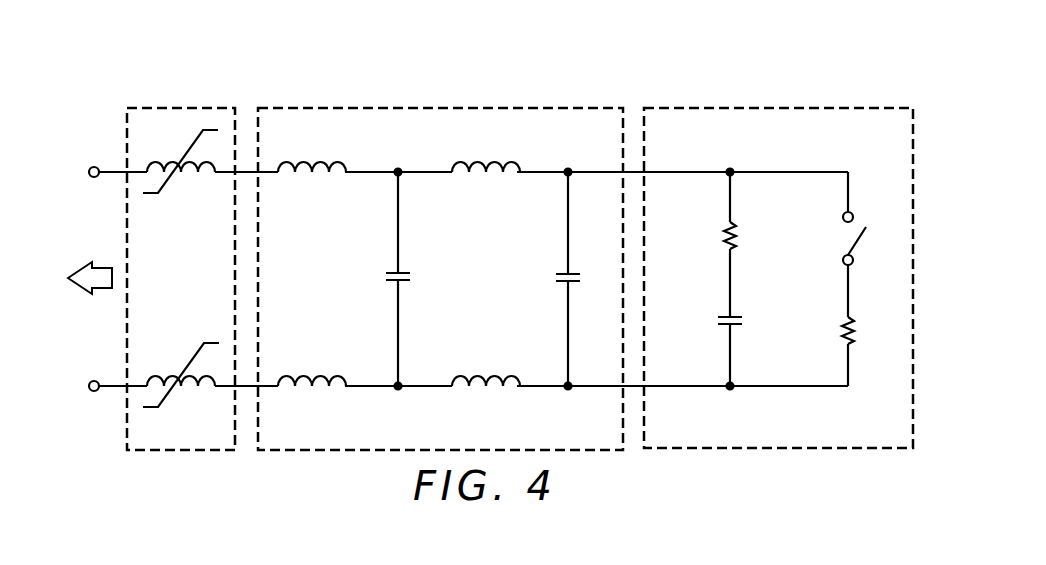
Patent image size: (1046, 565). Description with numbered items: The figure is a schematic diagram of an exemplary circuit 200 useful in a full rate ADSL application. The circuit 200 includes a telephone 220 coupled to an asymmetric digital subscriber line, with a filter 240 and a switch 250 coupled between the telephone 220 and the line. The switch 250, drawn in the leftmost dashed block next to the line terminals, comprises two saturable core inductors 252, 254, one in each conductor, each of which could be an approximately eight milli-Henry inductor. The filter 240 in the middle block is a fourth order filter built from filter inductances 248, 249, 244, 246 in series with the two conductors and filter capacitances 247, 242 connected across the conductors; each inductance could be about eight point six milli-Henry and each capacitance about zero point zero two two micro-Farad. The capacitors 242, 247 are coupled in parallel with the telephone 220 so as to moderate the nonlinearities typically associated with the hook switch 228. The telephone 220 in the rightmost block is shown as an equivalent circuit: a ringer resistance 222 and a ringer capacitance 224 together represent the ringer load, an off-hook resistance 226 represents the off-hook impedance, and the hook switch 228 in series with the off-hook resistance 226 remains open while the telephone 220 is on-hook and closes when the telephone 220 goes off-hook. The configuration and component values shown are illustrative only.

The circuit 200 is at (689, 77).
The switch 250 is at (216, 436).
The saturable core inductor 252 is at (183, 178).
The saturable core inductor 254 is at (180, 364).
The filter 240 is at (418, 154).
The filter inductance 248 is at (318, 177).
The filter inductance 249 is at (318, 391).
The filter capacitance 247 is at (385, 278).
The filter inductance 244 is at (490, 177).
The filter inductance 246 is at (490, 391).
The filter capacitance 242 is at (556, 278).
The telephone 220 is at (800, 154).
The ringer resistance 222 is at (724, 232).
The ringer capacitance 224 is at (718, 322).
The hook switch 228 is at (843, 240).
The off-hook resistance 226 is at (845, 332).